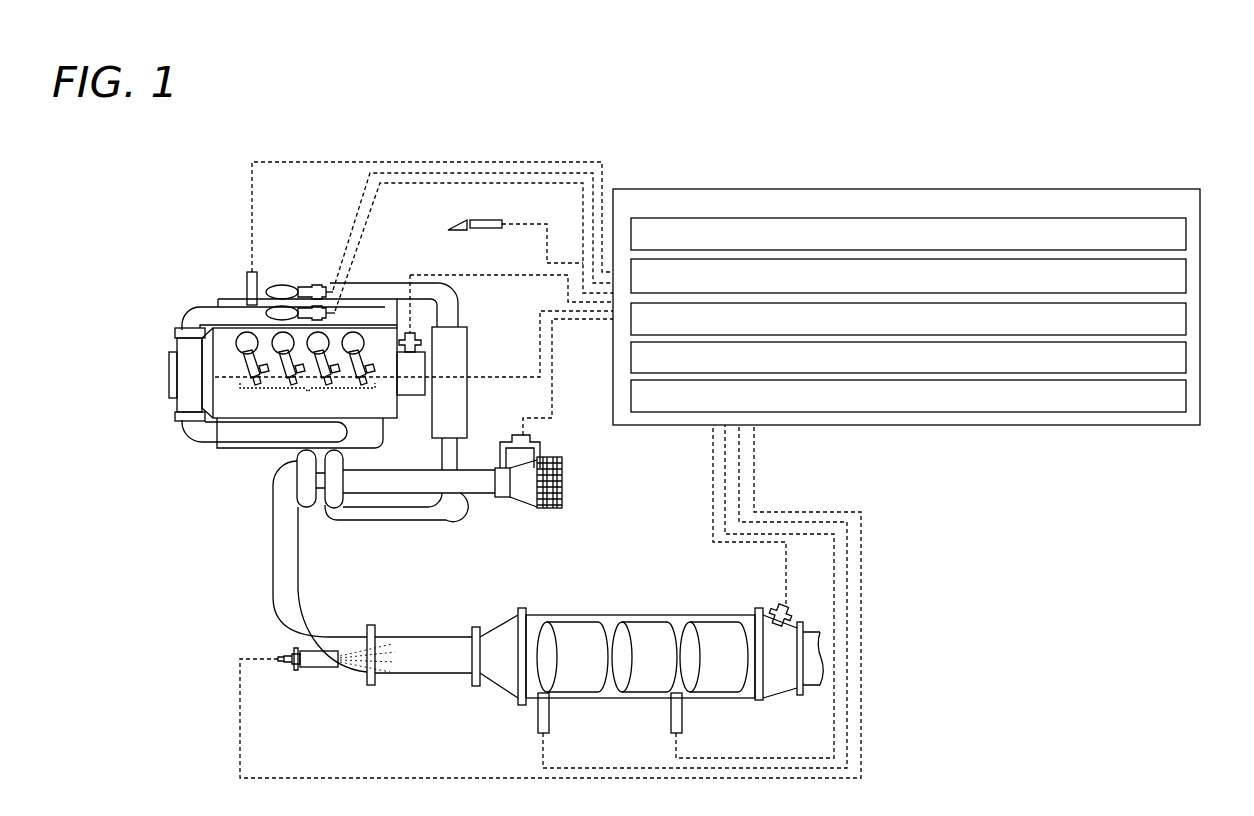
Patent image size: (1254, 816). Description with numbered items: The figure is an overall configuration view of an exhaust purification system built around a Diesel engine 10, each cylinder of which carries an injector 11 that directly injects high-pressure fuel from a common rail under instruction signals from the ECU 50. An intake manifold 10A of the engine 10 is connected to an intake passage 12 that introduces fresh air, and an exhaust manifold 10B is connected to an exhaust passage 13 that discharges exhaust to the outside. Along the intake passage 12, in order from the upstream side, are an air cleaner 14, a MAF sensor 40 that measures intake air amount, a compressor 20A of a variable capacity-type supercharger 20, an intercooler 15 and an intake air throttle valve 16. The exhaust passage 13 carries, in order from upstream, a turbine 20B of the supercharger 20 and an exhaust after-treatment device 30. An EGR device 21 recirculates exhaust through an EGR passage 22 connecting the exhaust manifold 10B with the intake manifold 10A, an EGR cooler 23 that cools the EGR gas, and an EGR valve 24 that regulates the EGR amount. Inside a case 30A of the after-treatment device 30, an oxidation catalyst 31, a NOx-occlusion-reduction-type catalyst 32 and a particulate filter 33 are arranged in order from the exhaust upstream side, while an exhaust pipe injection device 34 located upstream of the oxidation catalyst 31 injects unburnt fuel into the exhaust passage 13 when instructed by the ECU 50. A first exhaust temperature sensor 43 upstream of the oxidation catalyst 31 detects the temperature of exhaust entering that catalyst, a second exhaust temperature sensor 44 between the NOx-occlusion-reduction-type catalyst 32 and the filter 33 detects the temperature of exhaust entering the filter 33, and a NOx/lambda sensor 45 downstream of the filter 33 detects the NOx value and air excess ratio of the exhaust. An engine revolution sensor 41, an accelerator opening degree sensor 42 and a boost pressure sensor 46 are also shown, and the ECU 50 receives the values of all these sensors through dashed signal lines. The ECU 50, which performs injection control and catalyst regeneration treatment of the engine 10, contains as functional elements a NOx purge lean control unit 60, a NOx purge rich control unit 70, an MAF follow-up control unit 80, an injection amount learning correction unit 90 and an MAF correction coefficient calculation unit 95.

The engine 10 is at (372, 330).
The intake manifold 10A is at (232, 304).
The exhaust manifold 10B is at (234, 449).
The injector 11 is at (305, 374).
The intake passage 12 is at (415, 522).
The exhaust passage 13 is at (273, 547).
The air cleaner 14 is at (555, 457).
The intercooler 15 is at (468, 353).
The intake air throttle valve 16 is at (287, 287).
The variable capacity-type supercharger 20 is at (306, 556).
The compressor 20A is at (334, 508).
The turbine 20B is at (306, 507).
The EGR device 21 is at (186, 299).
The EGR passage 22 is at (203, 441).
The EGR cooler 23 is at (177, 365).
The EGR valve 24 is at (281, 309).
The exhaust after-treatment device 30 is at (674, 620).
The case 30A is at (556, 615).
The oxidation catalyst 31 is at (572, 668).
The NOx-occlusion-reduction-type catalyst 32 is at (640, 668).
The particulate filter 33 is at (709, 668).
The exhaust pipe injection device 34 is at (325, 668).
The MAF sensor 40 is at (518, 434).
The engine revolution sensor 41 is at (412, 332).
The accelerator opening degree sensor 42 is at (483, 220).
The first exhaust temperature sensor 43 is at (549, 718).
The second exhaust temperature sensor 44 is at (684, 718).
The NOx/lambda sensor 45 is at (774, 606).
The boost pressure sensor 46 is at (248, 271).
The ECU 50 is at (711, 189).
The NOx purge lean control unit 60 is at (1186, 234).
The NOx purge rich control unit 70 is at (1186, 276).
The MAF follow-up control unit 80 is at (1186, 320).
The injection amount learning correction unit 90 is at (1186, 358).
The MAF correction coefficient calculation unit 95 is at (1186, 396).